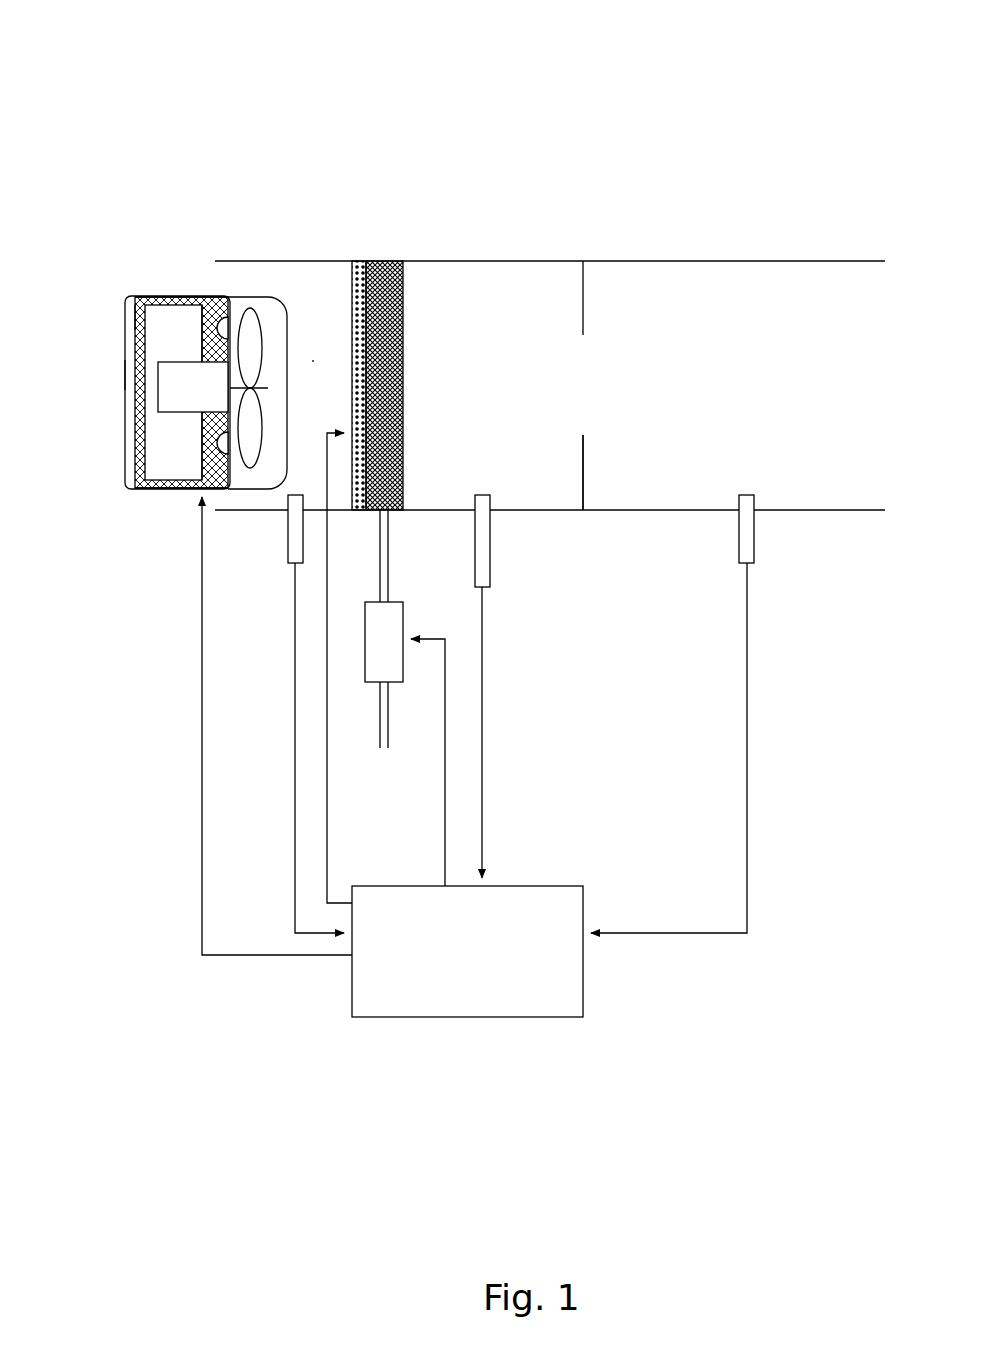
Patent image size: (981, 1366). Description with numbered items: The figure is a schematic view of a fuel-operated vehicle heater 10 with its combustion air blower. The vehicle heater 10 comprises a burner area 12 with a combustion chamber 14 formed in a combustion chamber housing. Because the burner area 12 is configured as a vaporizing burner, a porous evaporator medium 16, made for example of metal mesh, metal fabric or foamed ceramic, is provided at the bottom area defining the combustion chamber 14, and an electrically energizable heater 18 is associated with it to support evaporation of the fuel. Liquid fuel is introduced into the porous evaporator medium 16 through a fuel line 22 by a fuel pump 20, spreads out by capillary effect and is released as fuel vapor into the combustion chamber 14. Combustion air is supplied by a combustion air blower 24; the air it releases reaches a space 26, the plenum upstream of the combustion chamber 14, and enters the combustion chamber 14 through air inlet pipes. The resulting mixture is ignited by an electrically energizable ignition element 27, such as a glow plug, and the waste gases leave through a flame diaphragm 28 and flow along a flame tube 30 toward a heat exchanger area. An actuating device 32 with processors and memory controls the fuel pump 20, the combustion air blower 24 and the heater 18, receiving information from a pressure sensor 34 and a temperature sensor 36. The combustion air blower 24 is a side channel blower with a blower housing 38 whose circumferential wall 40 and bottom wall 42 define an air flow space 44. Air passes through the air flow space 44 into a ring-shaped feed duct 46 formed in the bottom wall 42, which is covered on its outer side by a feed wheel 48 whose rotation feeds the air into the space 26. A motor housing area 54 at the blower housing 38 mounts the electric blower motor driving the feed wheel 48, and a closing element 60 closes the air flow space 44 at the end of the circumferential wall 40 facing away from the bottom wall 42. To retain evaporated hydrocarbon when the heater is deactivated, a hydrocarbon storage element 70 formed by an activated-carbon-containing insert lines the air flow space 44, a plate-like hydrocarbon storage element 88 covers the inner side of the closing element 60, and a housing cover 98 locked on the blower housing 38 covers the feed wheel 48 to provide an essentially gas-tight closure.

The vehicle heater 10 is at (762, 198).
The burner area 12 is at (525, 261).
The combustion chamber 14 is at (556, 461).
The porous evaporator medium 16 is at (405, 295).
The electrically energizable heater 18 is at (362, 262).
The fuel pump 20 is at (367, 655).
The fuel line 22 is at (377, 715).
The combustion air blower 24 is at (147, 336).
The space 26 is at (313, 360).
The ignition element 27 is at (490, 543).
The flame diaphragm 28 is at (585, 302).
The flame tube 30 is at (785, 261).
The actuating device 32 is at (495, 1017).
The pressure sensor 34 is at (282, 557).
The temperature sensor 36 is at (755, 537).
The blower housing 38 is at (163, 297).
The circumferential wall 40 is at (185, 488).
The bottom wall 42 is at (243, 296).
The air flow space 44 is at (160, 455).
The feed duct 46 is at (223, 297).
The feed wheel 48 is at (268, 296).
The motor housing area 54 is at (158, 403).
The closing element 60 is at (123, 372).
The hydrocarbon storage element 70 is at (148, 297).
The hydrocarbon storage element 88 is at (124, 328).
The housing cover 98 is at (247, 490).